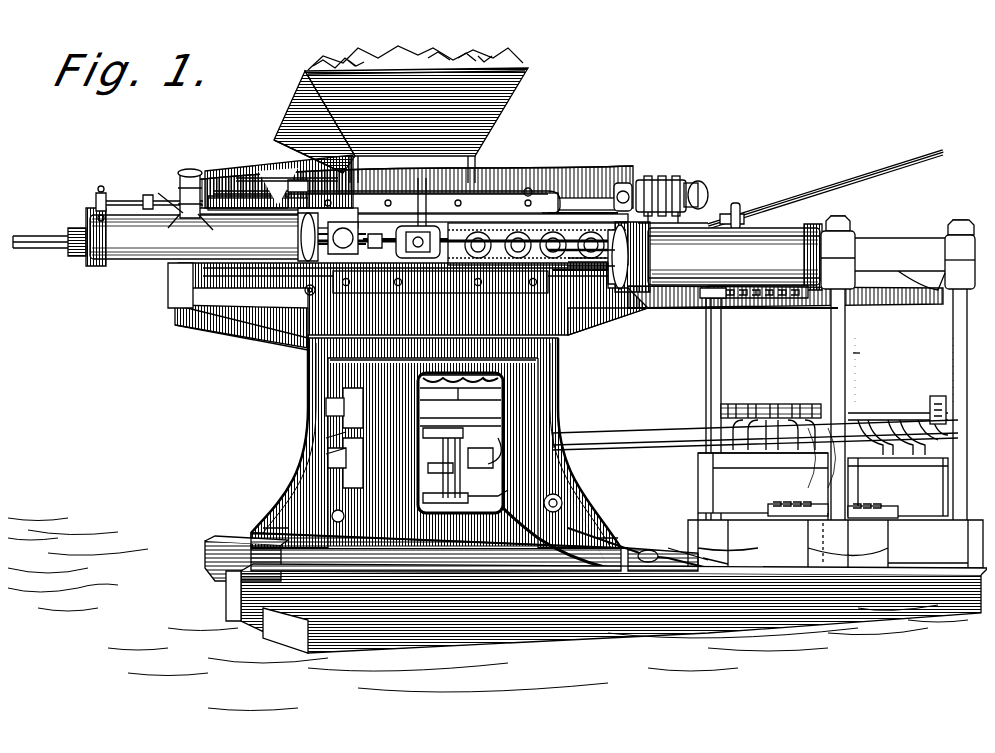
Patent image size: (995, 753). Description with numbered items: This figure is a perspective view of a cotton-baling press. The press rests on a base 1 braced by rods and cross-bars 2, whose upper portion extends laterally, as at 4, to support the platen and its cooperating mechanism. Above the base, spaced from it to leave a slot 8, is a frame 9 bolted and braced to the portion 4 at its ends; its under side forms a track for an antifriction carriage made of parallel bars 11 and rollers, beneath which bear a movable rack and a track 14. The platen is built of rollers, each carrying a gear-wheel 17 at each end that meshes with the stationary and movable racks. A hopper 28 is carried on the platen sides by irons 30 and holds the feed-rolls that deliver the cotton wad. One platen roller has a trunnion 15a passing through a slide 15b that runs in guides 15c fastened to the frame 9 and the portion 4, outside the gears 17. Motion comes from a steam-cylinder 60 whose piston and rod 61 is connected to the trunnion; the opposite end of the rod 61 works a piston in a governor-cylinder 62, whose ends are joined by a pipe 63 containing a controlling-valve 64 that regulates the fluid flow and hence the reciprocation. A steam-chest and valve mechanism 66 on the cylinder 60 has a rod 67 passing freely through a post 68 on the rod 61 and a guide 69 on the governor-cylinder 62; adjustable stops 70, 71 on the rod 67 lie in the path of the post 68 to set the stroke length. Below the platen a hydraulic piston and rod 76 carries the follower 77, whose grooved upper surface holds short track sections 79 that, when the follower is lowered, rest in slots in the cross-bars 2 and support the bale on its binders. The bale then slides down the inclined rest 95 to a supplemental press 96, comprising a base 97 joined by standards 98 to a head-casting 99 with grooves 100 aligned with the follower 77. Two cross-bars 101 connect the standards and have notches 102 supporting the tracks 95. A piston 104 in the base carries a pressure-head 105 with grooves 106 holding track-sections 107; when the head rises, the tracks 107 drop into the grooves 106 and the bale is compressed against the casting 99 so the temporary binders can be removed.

The base 1 is at (560, 480).
The cross-bars 2 is at (290, 478).
The lateral portion of the base 4 is at (238, 320).
The slot 8 is at (228, 210).
The frame 9 is at (300, 175).
The parallel bars 11 is at (548, 242).
The track 14 is at (578, 250).
The trunnion 15a is at (412, 250).
The slide 15b is at (380, 222).
The guides 15c is at (460, 198).
The gear-wheel 17 is at (362, 183).
The hopper 28 is at (410, 82).
The irons 30 is at (483, 165).
The steam-cylinder 60 is at (755, 265).
The piston and rod 61 is at (625, 178).
The governor-cylinder 62 is at (189, 237).
The pipe 63 is at (114, 193).
The controlling-valve 64 is at (183, 178).
The steam-chest and valve mechanism 66 is at (672, 172).
The rod 67 is at (505, 182).
The post 68 is at (414, 190).
The guide 69 is at (272, 170).
The stop 70 is at (565, 262).
The stop 71 is at (525, 212).
The piston and rod 76 is at (470, 458).
The follower 77 is at (470, 408).
The track sections 79 is at (318, 398).
The inclined rest 95 is at (650, 426).
The supplemental press 96 is at (904, 373).
The base 97 is at (835, 544).
The standards 98 is at (822, 345).
The head-casting 99 is at (876, 282).
The grooves 100 is at (780, 298).
The cross-bars 101 is at (763, 508).
The notches 102 is at (790, 462).
The piston 104 is at (862, 468).
The pressure-head 105 is at (874, 406).
The grooves 106 is at (752, 398).
The track-sections 107 is at (798, 402).